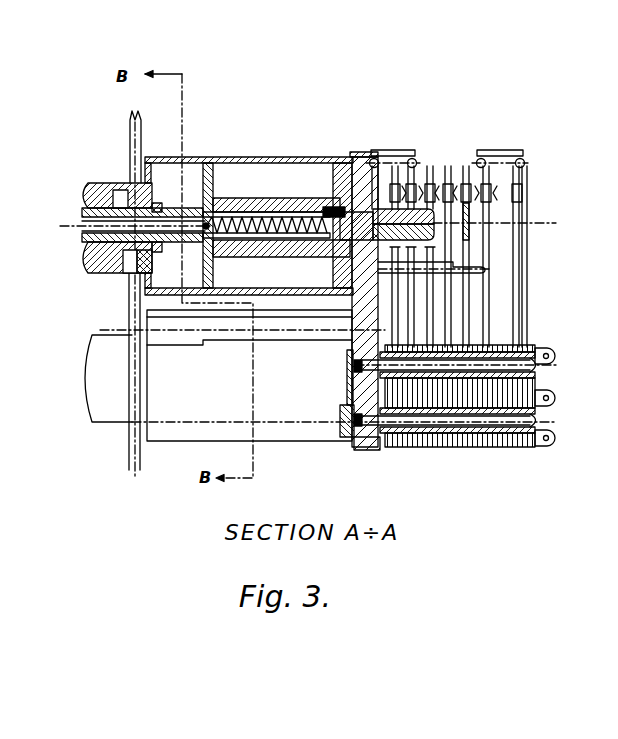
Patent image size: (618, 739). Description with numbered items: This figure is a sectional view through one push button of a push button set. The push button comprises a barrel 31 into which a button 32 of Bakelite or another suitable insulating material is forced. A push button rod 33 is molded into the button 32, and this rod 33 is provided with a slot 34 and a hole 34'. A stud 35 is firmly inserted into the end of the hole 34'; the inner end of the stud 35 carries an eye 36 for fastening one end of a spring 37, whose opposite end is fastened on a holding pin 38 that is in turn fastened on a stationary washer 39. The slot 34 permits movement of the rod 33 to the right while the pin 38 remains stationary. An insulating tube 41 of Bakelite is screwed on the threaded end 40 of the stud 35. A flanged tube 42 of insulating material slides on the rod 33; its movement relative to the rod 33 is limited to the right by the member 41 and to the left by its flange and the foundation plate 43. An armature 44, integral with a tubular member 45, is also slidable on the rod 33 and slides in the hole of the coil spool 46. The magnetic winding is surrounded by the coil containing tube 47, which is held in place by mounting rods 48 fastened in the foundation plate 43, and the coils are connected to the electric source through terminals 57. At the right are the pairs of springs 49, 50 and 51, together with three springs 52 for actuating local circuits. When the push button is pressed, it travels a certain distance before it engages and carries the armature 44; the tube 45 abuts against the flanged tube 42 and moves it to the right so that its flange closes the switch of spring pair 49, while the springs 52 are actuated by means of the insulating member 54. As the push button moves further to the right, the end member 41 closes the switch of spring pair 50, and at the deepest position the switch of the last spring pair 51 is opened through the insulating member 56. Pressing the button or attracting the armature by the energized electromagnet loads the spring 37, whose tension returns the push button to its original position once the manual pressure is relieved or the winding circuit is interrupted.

The barrel 31 is at (116, 185).
The button 32 is at (100, 203).
The push button rod 33 is at (105, 216).
The slot 34 is at (113, 242).
The hole 34' is at (259, 173).
The stud 35 is at (356, 210).
The eye 36 is at (322, 205).
The spring 37 is at (275, 218).
The holding pin 38 is at (220, 198).
The stationary washer 39 is at (203, 278).
The threaded end 40 is at (432, 226).
The insulating tube 41 is at (433, 212).
The flanged tube 42 is at (354, 206).
The foundation plate 43 is at (367, 450).
The armature 44 is at (100, 256).
The tubular member 45 is at (207, 250).
The coil spool 46 is at (285, 205).
The coil containing tube 47 is at (208, 163).
The mounting rods 48 is at (293, 335).
The pair of springs 49 is at (384, 192).
The pair of springs 50 is at (480, 177).
The pair of springs 51 is at (515, 178).
The springs 52 is at (427, 184).
The insulating member 54 is at (406, 158).
The insulating member 56 is at (492, 185).
The terminals 57 is at (470, 270).